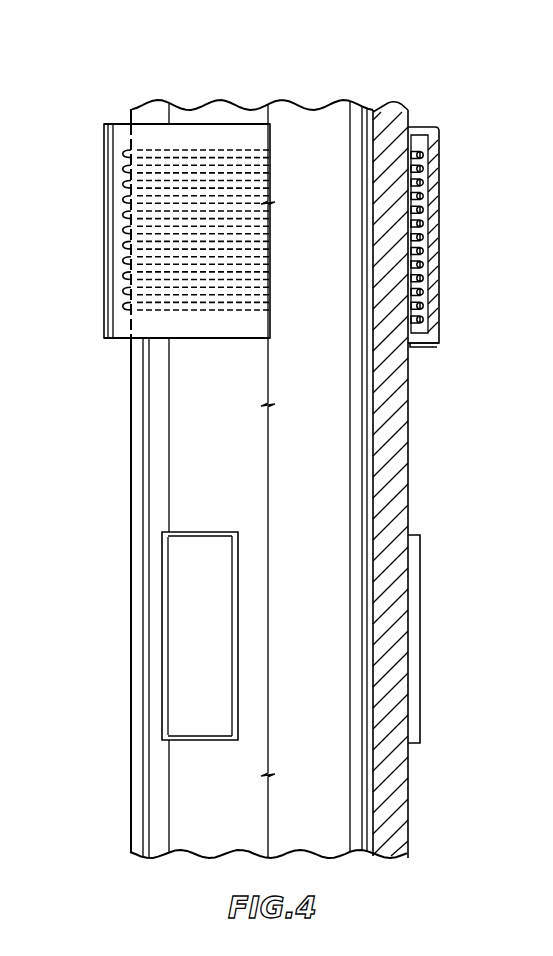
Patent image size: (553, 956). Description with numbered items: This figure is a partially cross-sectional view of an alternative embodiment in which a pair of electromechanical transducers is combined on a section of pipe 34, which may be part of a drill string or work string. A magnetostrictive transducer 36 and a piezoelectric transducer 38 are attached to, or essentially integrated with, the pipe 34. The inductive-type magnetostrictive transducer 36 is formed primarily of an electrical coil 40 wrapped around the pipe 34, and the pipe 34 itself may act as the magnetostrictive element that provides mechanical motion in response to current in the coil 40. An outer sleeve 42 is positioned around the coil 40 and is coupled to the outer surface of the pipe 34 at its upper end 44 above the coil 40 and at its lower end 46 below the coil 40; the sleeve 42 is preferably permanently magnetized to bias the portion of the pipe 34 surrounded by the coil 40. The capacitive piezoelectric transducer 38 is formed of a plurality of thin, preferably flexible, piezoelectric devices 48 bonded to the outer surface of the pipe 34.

The pipe 34 is at (386, 106).
The magnetostrictive transducer 36 is at (480, 230).
The piezoelectric transducer 38 is at (455, 675).
The electrical coil 40 is at (423, 155).
The outer sleeve 42 is at (439, 316).
The upper end 44 is at (424, 128).
The lower end 46 is at (417, 344).
The piezoelectric device 48 is at (213, 633).